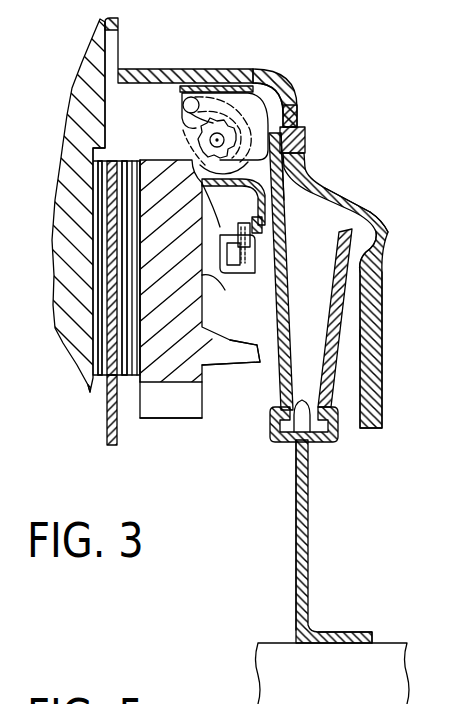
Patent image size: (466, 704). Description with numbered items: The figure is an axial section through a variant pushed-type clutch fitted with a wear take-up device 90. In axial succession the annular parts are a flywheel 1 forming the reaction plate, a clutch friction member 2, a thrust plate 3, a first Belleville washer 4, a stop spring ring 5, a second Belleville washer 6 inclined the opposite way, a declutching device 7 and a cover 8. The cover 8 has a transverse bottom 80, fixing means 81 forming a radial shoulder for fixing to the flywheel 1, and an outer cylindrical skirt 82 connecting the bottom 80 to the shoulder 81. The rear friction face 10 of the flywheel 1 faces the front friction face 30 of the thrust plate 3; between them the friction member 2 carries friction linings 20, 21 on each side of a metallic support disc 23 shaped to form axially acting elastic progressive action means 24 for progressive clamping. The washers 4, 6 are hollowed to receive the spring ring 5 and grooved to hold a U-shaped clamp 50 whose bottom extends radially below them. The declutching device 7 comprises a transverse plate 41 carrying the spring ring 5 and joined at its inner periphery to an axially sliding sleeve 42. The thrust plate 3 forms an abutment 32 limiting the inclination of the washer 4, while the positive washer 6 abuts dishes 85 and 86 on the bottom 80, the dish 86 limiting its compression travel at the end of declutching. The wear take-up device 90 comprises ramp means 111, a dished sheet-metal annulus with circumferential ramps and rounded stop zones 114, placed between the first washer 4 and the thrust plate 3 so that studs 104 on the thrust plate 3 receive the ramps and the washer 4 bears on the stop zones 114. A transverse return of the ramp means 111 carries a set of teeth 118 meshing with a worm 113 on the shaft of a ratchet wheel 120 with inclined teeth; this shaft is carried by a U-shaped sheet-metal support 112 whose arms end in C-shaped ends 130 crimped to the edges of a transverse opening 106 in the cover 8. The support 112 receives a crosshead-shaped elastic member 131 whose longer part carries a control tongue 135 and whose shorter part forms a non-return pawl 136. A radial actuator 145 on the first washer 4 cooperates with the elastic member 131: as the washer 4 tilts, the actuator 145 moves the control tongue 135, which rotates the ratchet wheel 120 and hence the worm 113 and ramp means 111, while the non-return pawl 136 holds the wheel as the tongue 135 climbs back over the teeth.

The flywheel 1 is at (80, 62).
The clutch friction member 2 is at (120, 158).
The thrust plate 3 is at (205, 420).
The first Belleville washer 4 is at (290, 330).
The stop spring ring 5 is at (303, 400).
The second Belleville washer 6 is at (326, 384).
The declutching device 7 is at (312, 612).
The cover 8 is at (384, 218).
The friction face 10 is at (92, 405).
The friction lining 20 is at (98, 192).
The friction lining 21 is at (111, 218).
The support disc 23 is at (107, 440).
The axially acting elastic progressive action means 24 is at (118, 268).
The friction face 30 is at (127, 413).
The abutment 32 is at (258, 365).
The transverse plate 41 is at (309, 578).
The sleeve 42 is at (352, 632).
The U-shaped clamp 50 is at (328, 442).
The bottom 80 is at (383, 376).
The fixing means 81 is at (112, 30).
The outer cylindrical skirt 82 is at (364, 205).
The dish 85 is at (371, 240).
The dish 86 is at (362, 345).
The device for taking up wear 90 is at (92, 91).
The studs 104 is at (250, 277).
The transverse opening 106 is at (300, 166).
The ramp means 111 is at (262, 300).
The support 112 is at (255, 70).
The worm 113 is at (145, 178).
The stop zones 114 is at (288, 210).
The set of teeth 118 is at (206, 152).
The ratchet wheel 120 is at (108, 100).
The C-shaped end 130 is at (298, 128).
The elastic member 131 is at (266, 104).
The control tongue 135 is at (199, 253).
The non-return pawl 136 is at (192, 97).
The actuator 145 is at (290, 122).